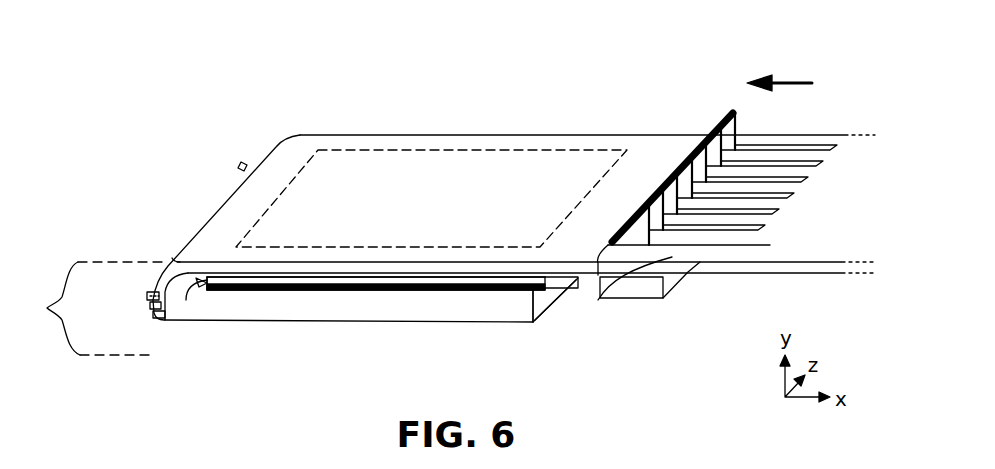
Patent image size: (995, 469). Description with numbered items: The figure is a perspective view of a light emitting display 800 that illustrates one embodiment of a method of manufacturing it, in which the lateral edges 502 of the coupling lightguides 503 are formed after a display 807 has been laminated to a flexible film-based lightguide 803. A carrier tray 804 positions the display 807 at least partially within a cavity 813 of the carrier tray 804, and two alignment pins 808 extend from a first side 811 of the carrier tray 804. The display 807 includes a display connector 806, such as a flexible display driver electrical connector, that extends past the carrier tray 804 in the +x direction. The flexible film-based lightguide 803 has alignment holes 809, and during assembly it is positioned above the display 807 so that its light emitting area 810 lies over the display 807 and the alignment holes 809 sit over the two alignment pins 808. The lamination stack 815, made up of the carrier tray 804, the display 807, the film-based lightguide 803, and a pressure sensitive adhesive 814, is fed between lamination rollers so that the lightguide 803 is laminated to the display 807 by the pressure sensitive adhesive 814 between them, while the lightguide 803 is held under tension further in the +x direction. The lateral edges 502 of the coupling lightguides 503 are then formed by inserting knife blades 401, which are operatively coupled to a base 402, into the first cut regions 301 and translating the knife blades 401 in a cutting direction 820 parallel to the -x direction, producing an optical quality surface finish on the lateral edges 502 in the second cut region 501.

The light emitting display 800 is at (252, 126).
The flexible film-based lightguide 803 is at (510, 135).
The light emitting area 810 is at (437, 150).
The alignment pins 808 is at (240, 164).
The alignment holes 809 is at (150, 306).
The first side 811 is at (160, 314).
The lamination stack 815 is at (46, 308).
The cavity 813 is at (186, 300).
The pressure sensitive adhesive 814 is at (235, 283).
The display 807 is at (378, 283).
The carrier tray 804 is at (394, 306).
The display connector 806 is at (562, 290).
The knife blades 401 is at (652, 206).
The lateral edges 502 is at (728, 158).
The coupling lightguides 503 is at (803, 158).
The second cut region 501 is at (603, 292).
The base 402 is at (637, 289).
The first cut regions 301 is at (690, 279).
The cutting direction 820 is at (802, 82).